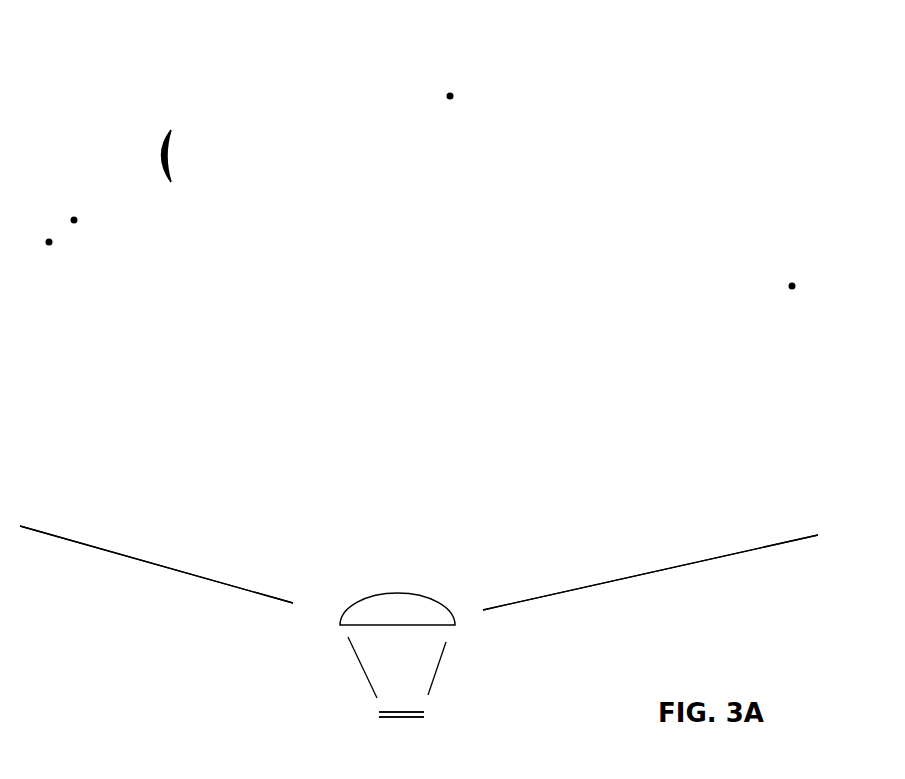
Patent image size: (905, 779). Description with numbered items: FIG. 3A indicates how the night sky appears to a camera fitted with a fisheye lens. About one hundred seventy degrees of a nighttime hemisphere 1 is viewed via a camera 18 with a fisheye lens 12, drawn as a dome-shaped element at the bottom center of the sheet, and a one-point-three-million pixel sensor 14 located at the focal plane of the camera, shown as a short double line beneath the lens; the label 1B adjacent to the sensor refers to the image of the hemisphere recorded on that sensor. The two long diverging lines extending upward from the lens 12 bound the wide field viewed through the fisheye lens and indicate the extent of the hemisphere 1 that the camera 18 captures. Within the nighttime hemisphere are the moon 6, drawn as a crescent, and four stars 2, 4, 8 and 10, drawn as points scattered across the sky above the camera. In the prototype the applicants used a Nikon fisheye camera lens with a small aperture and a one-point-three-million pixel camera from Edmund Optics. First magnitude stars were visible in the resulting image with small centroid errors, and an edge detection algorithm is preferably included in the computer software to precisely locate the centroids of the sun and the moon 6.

The nighttime hemisphere 1 is at (724, 122).
The detector plane / target plane 1B is at (348, 714).
The star 2 is at (44, 222).
The star 4 is at (74, 198).
The moon 6 is at (173, 118).
The star 8 is at (454, 78).
The star 10 is at (789, 259).
The fisheye lens 12 is at (510, 629).
The 1.3-million pixel sensor 14 is at (448, 710).
The camera 18 is at (158, 626).